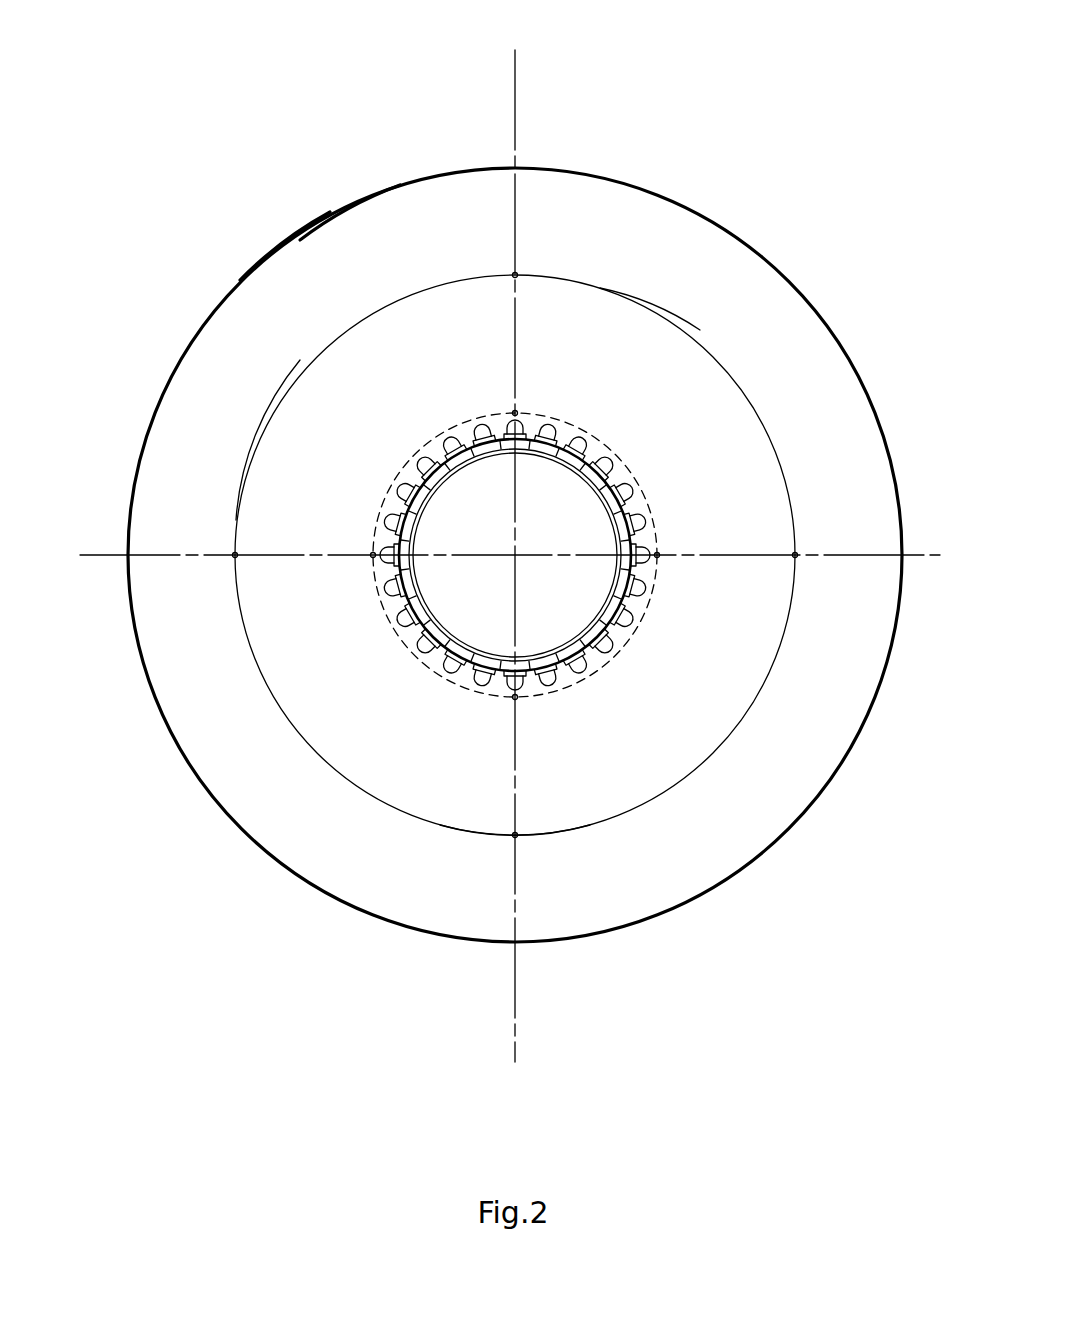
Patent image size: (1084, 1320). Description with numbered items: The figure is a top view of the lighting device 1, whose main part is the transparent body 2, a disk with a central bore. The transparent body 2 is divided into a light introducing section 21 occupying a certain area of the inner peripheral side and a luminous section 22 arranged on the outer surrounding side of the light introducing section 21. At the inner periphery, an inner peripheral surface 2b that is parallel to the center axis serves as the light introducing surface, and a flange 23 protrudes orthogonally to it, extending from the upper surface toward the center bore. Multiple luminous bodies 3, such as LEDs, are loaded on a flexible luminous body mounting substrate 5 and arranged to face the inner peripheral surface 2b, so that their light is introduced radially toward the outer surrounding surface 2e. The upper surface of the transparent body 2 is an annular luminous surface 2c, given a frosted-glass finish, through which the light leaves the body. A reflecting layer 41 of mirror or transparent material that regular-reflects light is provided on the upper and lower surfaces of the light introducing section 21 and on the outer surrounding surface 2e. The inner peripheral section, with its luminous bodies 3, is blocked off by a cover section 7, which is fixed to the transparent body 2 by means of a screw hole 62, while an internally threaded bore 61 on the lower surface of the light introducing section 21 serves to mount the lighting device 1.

The lighting device 1 is at (403, 117).
The transparent body 2 is at (136, 713).
The inner peripheral surface (light introducing surface) 2b is at (412, 567).
The luminous surface 2c is at (270, 343).
The outer surrounding surface 2e is at (295, 238).
The luminous bodies 3 is at (568, 667).
The luminous body mounting substrate 5 is at (425, 506).
The cover section 7 is at (413, 538).
The light introducing section 21 is at (442, 308).
The luminous section 22 is at (618, 248).
The flange 23 is at (422, 607).
The reflecting layer 41 is at (337, 212).
The internally threaded bore 61 is at (513, 833).
The screw hole 62 is at (660, 565).